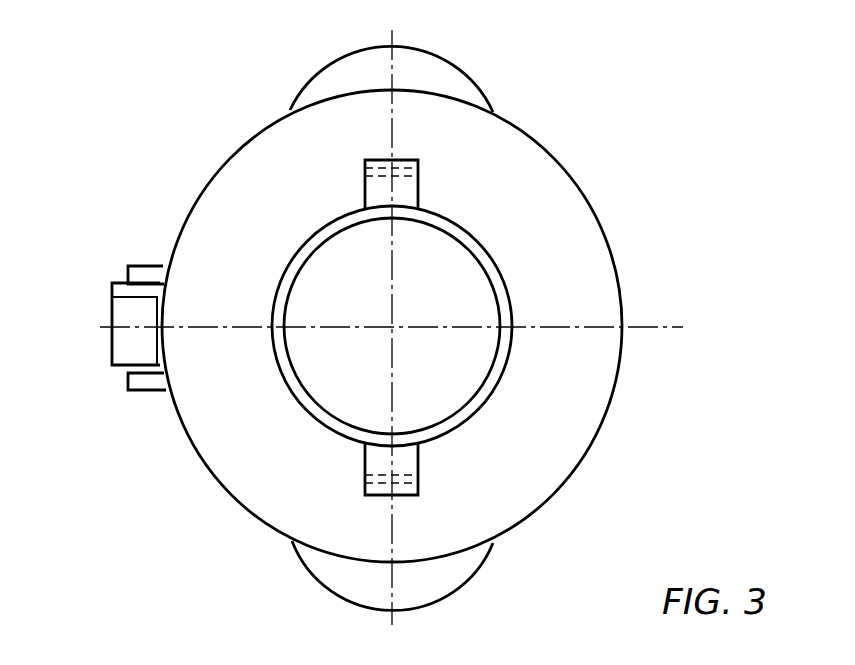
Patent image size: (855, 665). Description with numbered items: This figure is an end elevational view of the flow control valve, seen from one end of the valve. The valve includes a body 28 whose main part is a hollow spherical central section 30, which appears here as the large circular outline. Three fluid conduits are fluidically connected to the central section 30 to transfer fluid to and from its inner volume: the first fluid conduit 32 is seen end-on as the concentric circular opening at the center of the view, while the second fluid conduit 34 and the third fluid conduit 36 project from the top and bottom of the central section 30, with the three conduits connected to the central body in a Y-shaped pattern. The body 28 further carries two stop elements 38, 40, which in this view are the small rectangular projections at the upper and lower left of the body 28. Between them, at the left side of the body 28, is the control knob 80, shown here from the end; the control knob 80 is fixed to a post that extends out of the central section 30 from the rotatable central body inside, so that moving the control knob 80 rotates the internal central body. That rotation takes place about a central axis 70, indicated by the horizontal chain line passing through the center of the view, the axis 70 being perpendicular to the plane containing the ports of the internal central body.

The body 28 is at (528, 130).
The hollow spherical central section 30 is at (568, 207).
The first fluid conduit 32 is at (502, 273).
The second fluid conduit 34 is at (438, 78).
The third fluid conduit 36 is at (447, 577).
The stop element 38 is at (148, 390).
The stop element 40 is at (148, 270).
The central axis 70 is at (205, 327).
The control knob 80 is at (113, 306).